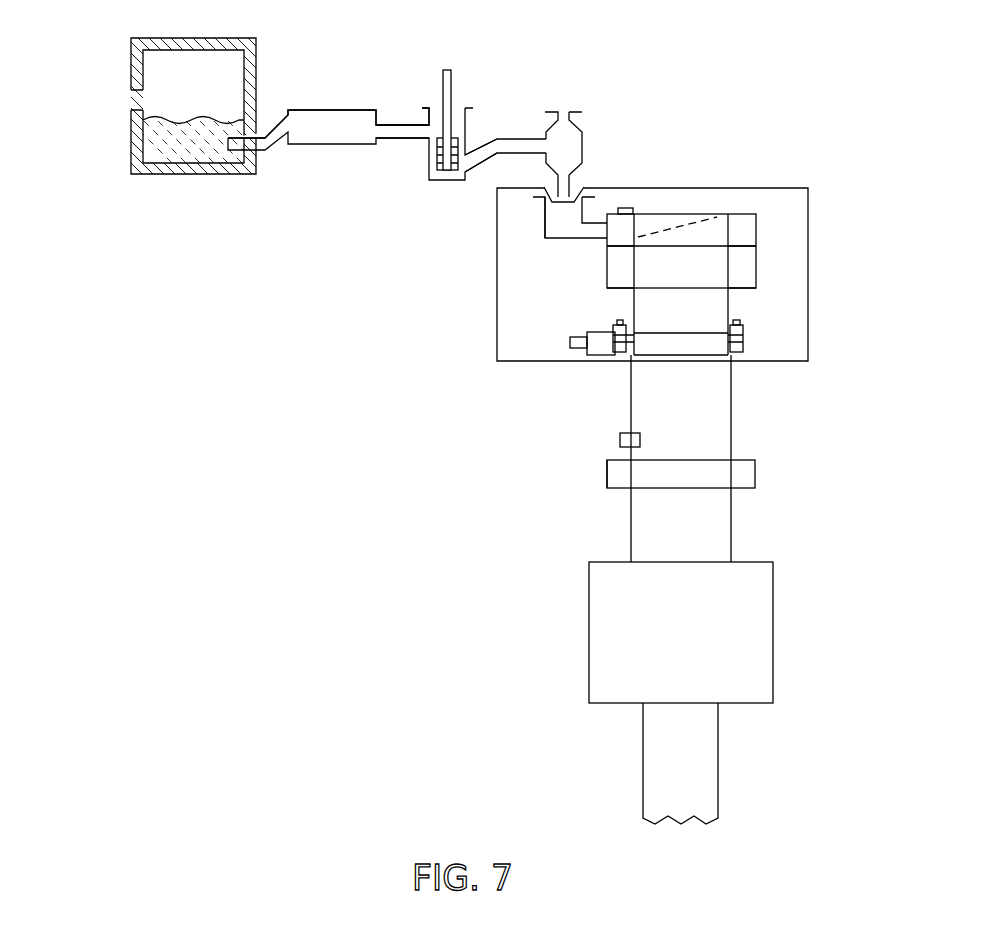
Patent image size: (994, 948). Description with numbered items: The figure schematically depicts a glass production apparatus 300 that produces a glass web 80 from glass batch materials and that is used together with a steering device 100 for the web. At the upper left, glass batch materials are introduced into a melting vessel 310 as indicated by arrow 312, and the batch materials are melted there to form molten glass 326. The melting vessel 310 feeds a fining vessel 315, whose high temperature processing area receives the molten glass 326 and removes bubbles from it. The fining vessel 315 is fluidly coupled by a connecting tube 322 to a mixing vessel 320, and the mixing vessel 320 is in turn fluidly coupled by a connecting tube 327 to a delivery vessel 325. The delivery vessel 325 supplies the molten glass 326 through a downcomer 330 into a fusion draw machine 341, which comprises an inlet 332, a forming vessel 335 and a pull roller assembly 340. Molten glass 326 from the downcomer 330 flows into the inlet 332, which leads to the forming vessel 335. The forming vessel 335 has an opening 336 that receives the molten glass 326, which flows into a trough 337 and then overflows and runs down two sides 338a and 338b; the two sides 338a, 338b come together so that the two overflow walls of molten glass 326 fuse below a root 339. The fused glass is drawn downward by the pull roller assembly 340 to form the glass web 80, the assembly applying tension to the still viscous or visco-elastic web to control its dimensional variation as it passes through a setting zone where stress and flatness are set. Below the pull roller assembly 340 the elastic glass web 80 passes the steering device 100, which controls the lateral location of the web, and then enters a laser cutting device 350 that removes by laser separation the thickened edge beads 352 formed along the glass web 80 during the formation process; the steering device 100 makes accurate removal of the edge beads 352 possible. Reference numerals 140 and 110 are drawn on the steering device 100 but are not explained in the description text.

The glass production apparatus 300 is at (765, 97).
The melting vessel 310 is at (132, 73).
The arrow 312 is at (128, 99).
The molten glass 326 is at (198, 120).
The fining vessel 315 is at (332, 110).
The connecting tube 322 is at (400, 140).
The mixing vessel 320 is at (467, 128).
The connecting tube 327 is at (500, 156).
The delivery vessel 325 is at (583, 143).
The downcomer 330 is at (573, 178).
The opening 336 is at (605, 240).
The inlet 332 is at (545, 238).
The fusion draw machine 341 is at (497, 292).
The forming vessel 335 is at (756, 230).
The trough 337 is at (687, 220).
The side 338a is at (643, 263).
The side 338b is at (756, 270).
The root 339 is at (667, 290).
The pull roller assembly 340 is at (743, 335).
The edge beads 352 is at (629, 408).
The nozzle 140 is at (619, 437).
The steering device 100 is at (775, 473).
The print head body 110 is at (603, 483).
The laser cutting device 350 is at (781, 619).
The glass web 80 is at (719, 773).